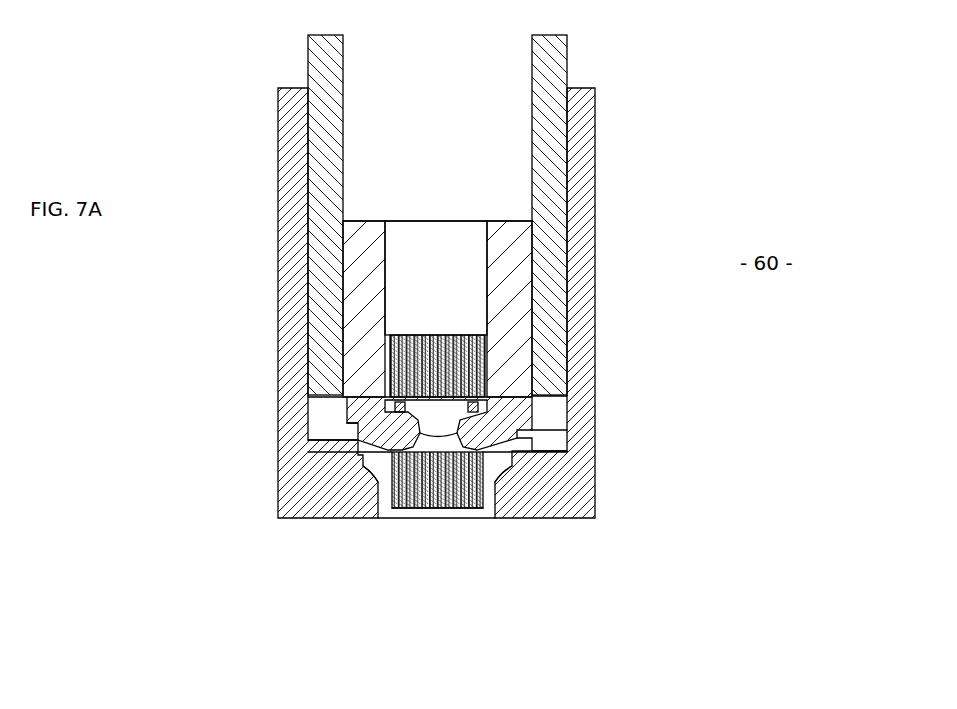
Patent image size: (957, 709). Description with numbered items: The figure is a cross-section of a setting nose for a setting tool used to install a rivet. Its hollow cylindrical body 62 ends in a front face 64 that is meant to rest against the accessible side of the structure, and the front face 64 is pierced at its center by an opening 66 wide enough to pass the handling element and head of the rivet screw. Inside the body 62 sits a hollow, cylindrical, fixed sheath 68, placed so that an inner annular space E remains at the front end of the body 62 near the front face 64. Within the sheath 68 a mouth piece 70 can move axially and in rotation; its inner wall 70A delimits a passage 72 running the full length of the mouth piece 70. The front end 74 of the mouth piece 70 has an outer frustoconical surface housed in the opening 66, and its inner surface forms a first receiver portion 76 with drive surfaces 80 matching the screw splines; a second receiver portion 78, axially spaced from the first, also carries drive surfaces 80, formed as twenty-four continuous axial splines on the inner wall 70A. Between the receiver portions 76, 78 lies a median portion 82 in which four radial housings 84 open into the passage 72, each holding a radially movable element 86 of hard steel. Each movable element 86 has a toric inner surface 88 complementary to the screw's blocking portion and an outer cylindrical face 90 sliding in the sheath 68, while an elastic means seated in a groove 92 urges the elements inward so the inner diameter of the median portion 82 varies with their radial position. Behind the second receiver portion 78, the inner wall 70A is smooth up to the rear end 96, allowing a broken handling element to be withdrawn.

The hollow cylindrical body 62 is at (596, 213).
The front face 64 is at (573, 520).
The opening 66 is at (378, 510).
The sheath 68 is at (566, 70).
The mouth piece 70 is at (358, 237).
The inner wall 70A is at (385, 235).
The passage 72 is at (462, 265).
The front end 74 is at (491, 478).
The first receiver portion 76 is at (423, 509).
The second receiver portion 78 is at (410, 335).
The drive surfaces 80 is at (448, 478).
The median portion 82 is at (433, 432).
The housing 84 is at (347, 413).
The movable element 86 is at (508, 412).
The inner surface 88 is at (417, 431).
The outer cylindrical face 90 is at (532, 420).
The groove 92 is at (518, 434).
The rear end 96 is at (510, 220).
The inner annular space E is at (327, 423).